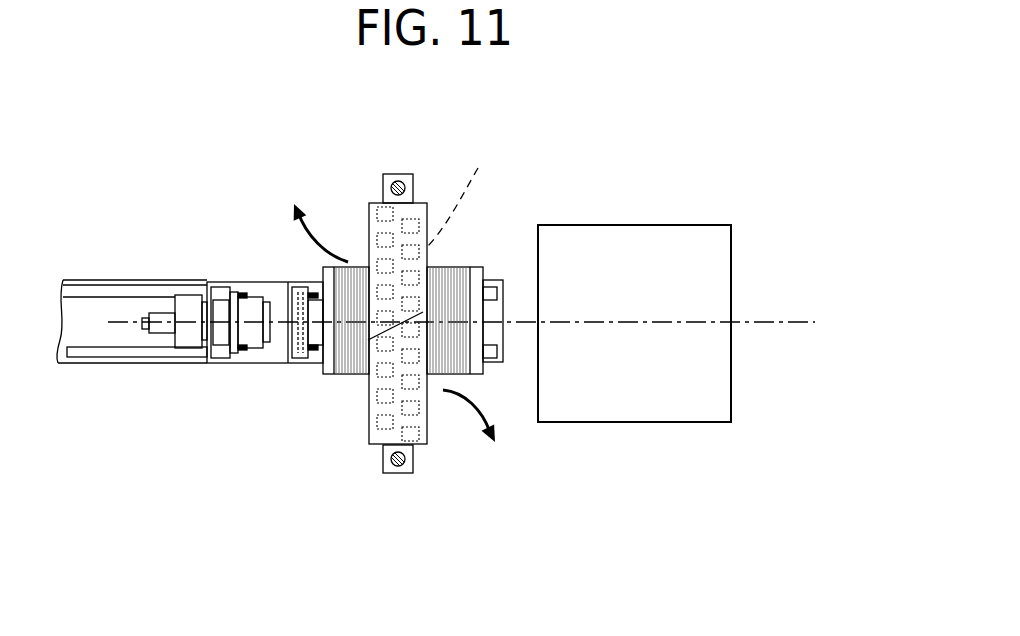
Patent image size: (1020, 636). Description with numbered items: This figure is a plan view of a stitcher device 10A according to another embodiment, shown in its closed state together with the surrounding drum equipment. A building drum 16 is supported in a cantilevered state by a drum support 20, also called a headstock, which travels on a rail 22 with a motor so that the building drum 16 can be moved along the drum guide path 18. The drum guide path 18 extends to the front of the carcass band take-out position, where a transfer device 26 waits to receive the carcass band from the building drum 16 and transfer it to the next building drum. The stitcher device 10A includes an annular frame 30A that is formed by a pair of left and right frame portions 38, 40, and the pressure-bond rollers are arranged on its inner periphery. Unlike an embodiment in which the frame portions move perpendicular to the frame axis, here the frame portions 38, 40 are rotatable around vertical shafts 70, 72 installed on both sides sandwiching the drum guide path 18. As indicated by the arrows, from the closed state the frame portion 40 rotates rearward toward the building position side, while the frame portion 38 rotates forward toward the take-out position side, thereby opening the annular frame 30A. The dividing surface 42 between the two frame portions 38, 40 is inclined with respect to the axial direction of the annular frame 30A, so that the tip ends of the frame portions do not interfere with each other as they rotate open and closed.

The stitcher device 10A is at (364, 312).
The building drum 16 is at (483, 270).
The drum guide path 18 is at (110, 278).
The drum support 20 is at (260, 355).
The rail 22 is at (118, 357).
The transfer device 26 is at (688, 223).
The annular frame 30A is at (430, 207).
The frame portion 38 is at (427, 428).
The frame portion 40 is at (352, 207).
The dividing surface 42 is at (393, 330).
The vertical shaft 70 is at (396, 181).
The vertical shaft 72 is at (390, 461).